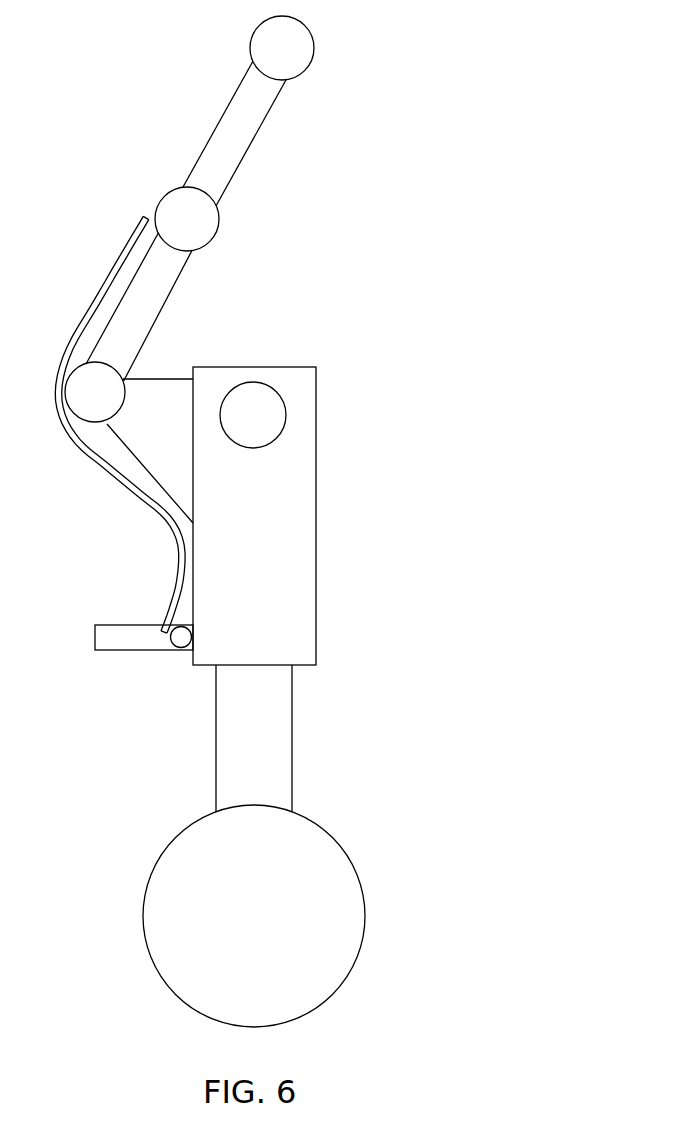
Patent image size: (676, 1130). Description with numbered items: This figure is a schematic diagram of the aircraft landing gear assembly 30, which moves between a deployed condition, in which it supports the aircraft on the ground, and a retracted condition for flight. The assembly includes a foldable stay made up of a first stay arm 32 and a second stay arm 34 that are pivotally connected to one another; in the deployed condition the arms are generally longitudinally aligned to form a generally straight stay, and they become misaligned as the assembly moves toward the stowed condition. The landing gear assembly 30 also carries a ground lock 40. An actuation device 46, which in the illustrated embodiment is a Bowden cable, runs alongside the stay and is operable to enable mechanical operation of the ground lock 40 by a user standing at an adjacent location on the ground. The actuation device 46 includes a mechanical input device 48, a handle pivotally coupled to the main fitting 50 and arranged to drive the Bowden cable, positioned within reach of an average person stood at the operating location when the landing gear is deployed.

The aircraft landing gear assembly 30 is at (476, 151).
The first stay arm 32 is at (243, 133).
The second stay arm 34 is at (150, 298).
The ground lock 40 is at (140, 196).
The actuation device 46 is at (100, 283).
The mechanical input device 48 is at (130, 642).
The main fitting 50 is at (313, 557).